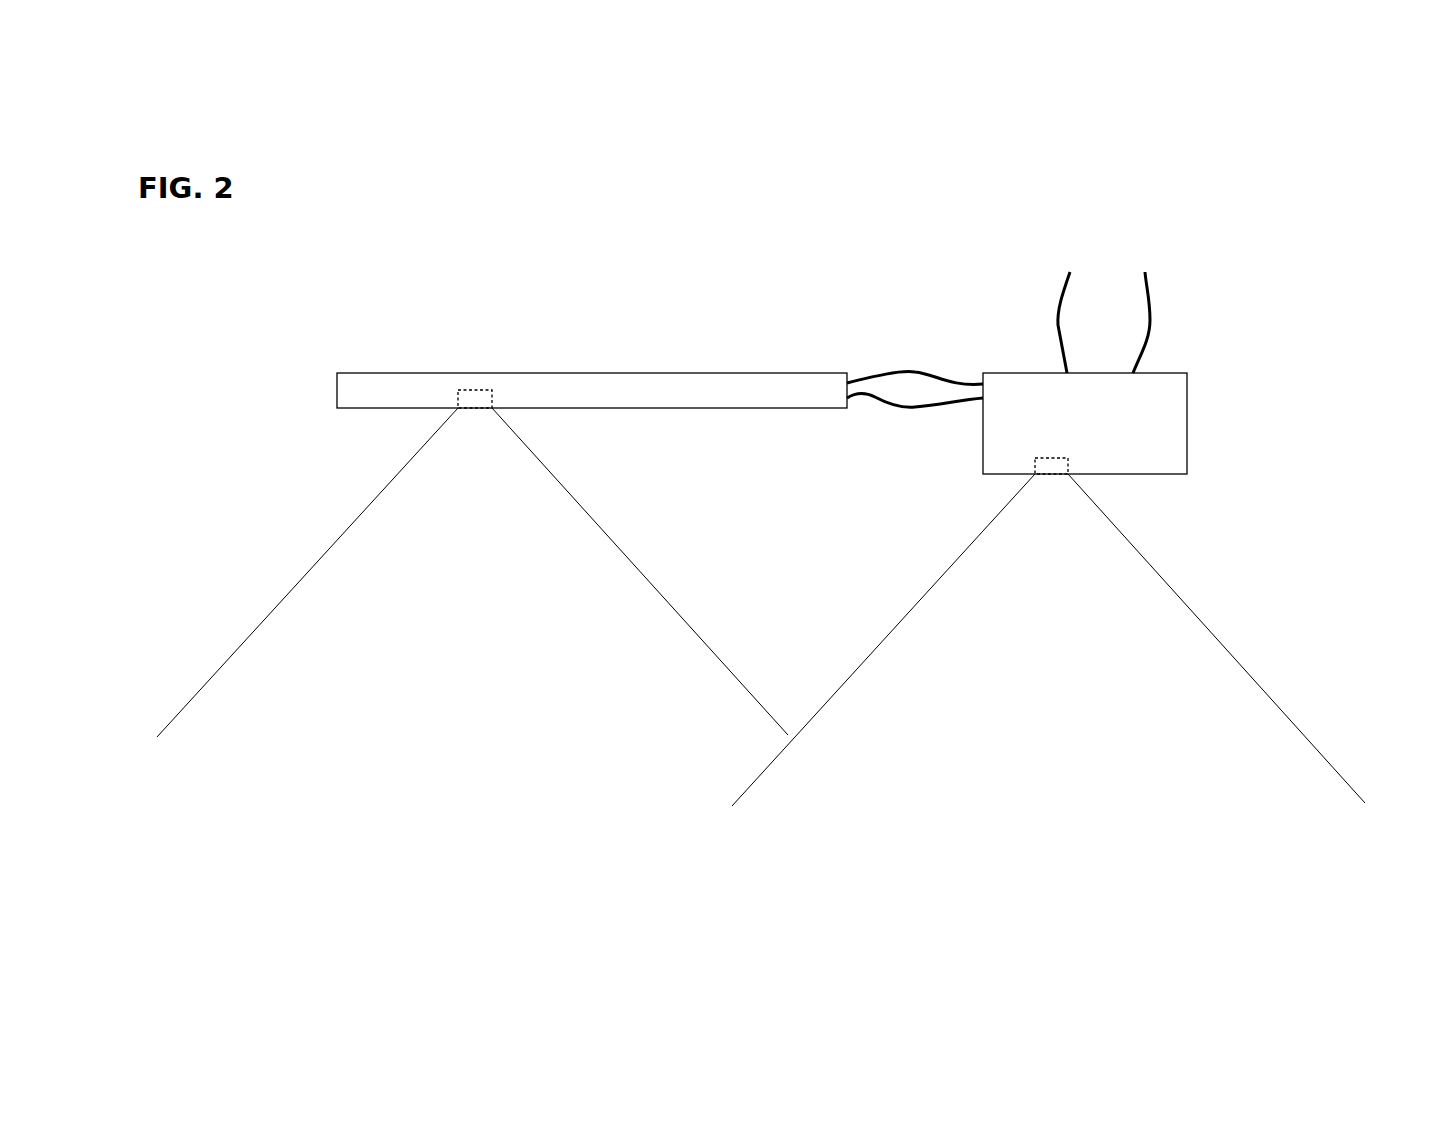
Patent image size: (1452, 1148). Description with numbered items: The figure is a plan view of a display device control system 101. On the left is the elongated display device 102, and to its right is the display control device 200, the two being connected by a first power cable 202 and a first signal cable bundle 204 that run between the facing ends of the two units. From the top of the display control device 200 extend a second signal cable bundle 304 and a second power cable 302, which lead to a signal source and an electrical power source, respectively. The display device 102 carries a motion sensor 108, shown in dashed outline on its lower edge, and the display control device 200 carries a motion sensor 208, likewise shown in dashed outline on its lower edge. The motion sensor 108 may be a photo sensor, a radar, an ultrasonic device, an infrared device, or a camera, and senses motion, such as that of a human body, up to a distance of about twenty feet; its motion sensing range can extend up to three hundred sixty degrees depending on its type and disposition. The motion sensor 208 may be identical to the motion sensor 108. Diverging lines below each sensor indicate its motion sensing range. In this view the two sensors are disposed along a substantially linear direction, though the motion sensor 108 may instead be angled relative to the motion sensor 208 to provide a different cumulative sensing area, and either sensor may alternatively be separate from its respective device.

The display device control system 101 is at (1352, 233).
The display device 102 is at (337, 388).
The motion sensor 108 is at (472, 390).
The display control device 200 is at (1188, 450).
The first power cable 202 is at (895, 408).
The first signal cable bundle 204 is at (898, 369).
The motion sensor 208 is at (1035, 458).
The second power cable 302 is at (1150, 338).
The second signal cable bundle 304 is at (1055, 327).